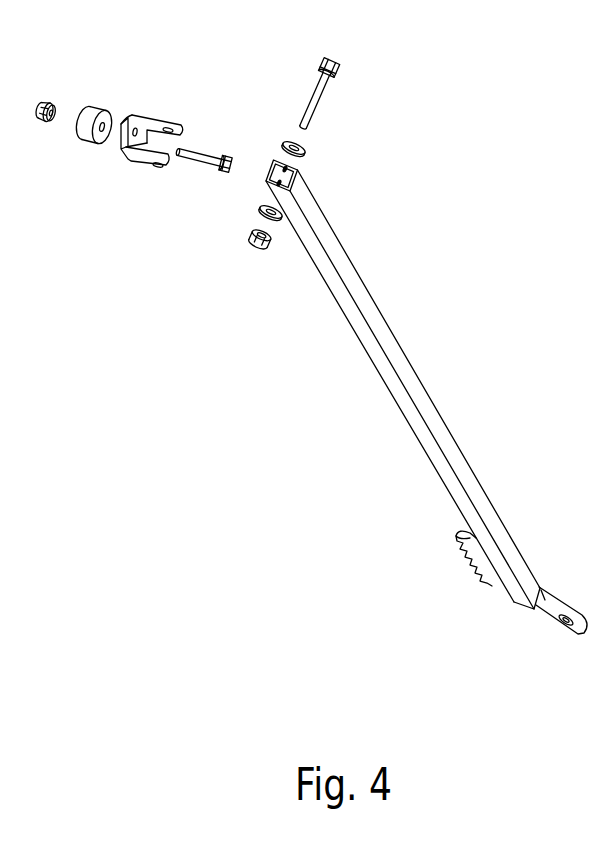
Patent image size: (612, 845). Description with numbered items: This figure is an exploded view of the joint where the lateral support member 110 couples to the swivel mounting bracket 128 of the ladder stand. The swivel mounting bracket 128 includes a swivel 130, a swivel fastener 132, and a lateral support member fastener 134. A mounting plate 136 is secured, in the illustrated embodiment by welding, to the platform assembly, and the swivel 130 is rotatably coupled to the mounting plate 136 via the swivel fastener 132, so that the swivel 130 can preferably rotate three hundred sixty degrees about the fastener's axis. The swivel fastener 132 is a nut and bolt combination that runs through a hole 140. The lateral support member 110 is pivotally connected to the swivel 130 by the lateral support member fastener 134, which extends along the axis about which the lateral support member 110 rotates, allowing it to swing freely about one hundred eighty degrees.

The lateral support member 110 is at (432, 412).
The swivel mounting bracket 128 is at (78, 79).
The swivel 130 is at (153, 118).
The swivel fastener 132 is at (201, 157).
The lateral support member fastener 134 is at (327, 60).
The mounting plate 136 is at (93, 109).
The hole 140 is at (132, 133).